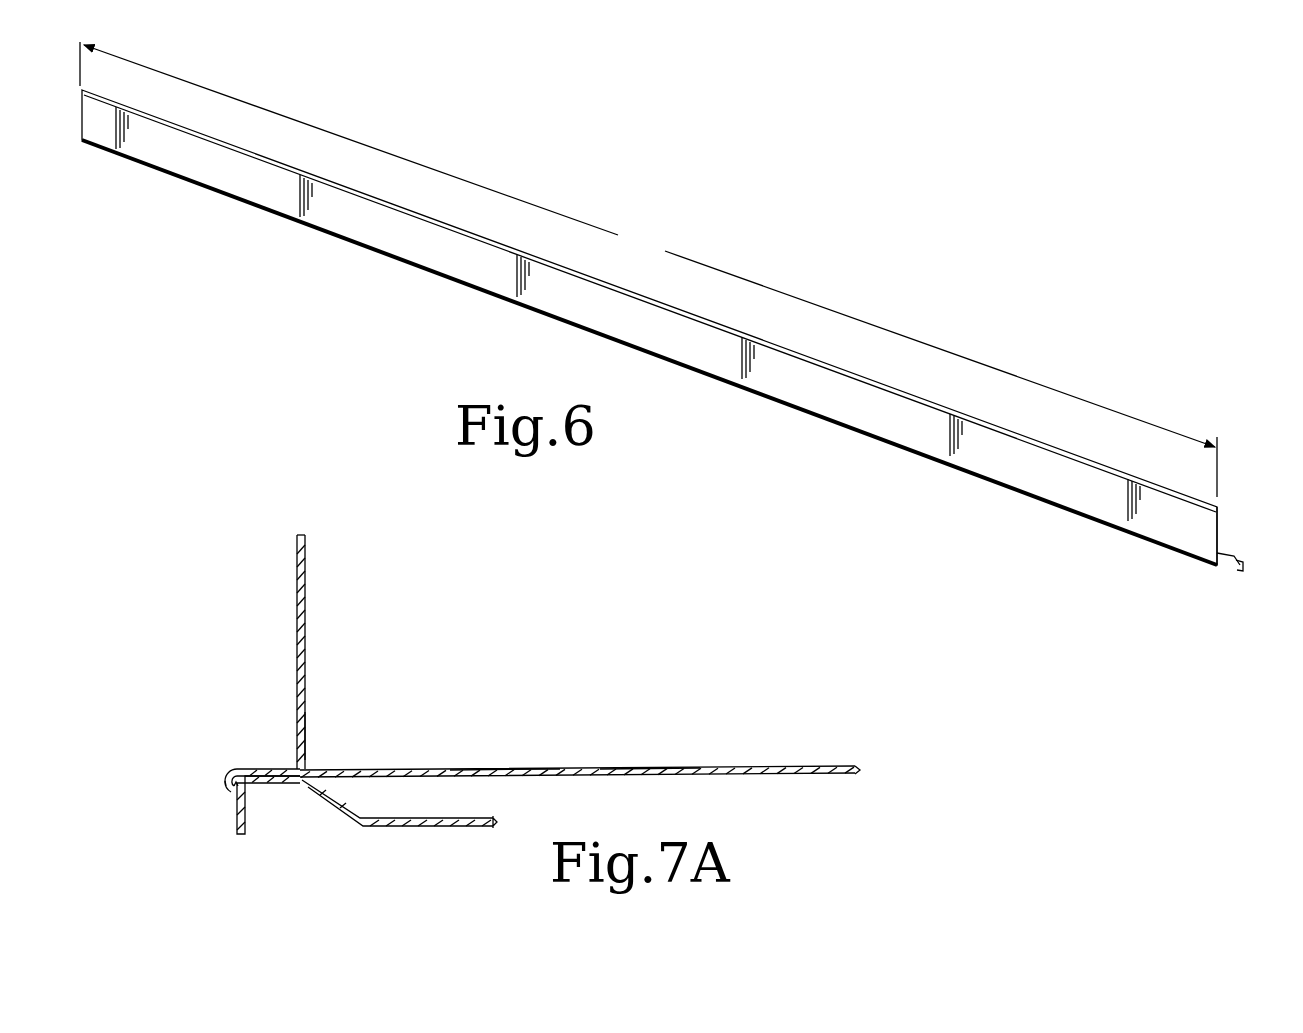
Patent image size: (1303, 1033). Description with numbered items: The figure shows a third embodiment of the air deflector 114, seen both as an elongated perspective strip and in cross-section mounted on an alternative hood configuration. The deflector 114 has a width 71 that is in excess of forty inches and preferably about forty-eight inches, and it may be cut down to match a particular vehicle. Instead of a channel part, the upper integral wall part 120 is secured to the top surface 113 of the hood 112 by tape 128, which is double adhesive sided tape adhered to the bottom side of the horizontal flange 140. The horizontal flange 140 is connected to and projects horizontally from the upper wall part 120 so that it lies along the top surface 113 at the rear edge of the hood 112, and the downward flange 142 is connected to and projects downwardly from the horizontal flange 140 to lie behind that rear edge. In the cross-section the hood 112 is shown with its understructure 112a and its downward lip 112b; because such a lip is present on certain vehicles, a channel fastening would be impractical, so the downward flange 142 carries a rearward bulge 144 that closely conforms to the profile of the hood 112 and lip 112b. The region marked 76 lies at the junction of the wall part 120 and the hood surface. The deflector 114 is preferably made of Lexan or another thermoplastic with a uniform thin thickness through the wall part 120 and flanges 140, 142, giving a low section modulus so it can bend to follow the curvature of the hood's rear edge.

In FIG. 6, the width 71 is at (648, 269).
In FIG. 6, the deflector 114 is at (952, 404).
In FIG. 7A, the deflector 114 is at (311, 605).
In FIG. 6, the upper integral wall part 120 is at (1106, 477).
In FIG. 7A, the upper integral wall part 120 is at (293, 565).
In FIG. 6, the tape 128 is at (565, 328).
In FIG. 7A, the tape 128 is at (367, 770).
In FIG. 6, the horizontal flange 140 is at (1225, 554).
In FIG. 7A, the horizontal flange 140 is at (272, 765).
In FIG. 6, the downward flange 142 is at (1243, 569).
In FIG. 7A, the downward flange 142 is at (223, 794).
In FIG. 7A, the rearward bulge 144 is at (216, 772).
In FIG. 7A, the junction 76 is at (309, 712).
In FIG. 7A, the hood 112 is at (462, 769).
In FIG. 7A, the top surface 113 is at (650, 769).
In FIG. 7A, the understructure 112a is at (358, 830).
In FIG. 7A, the downward lip 112b is at (233, 839).